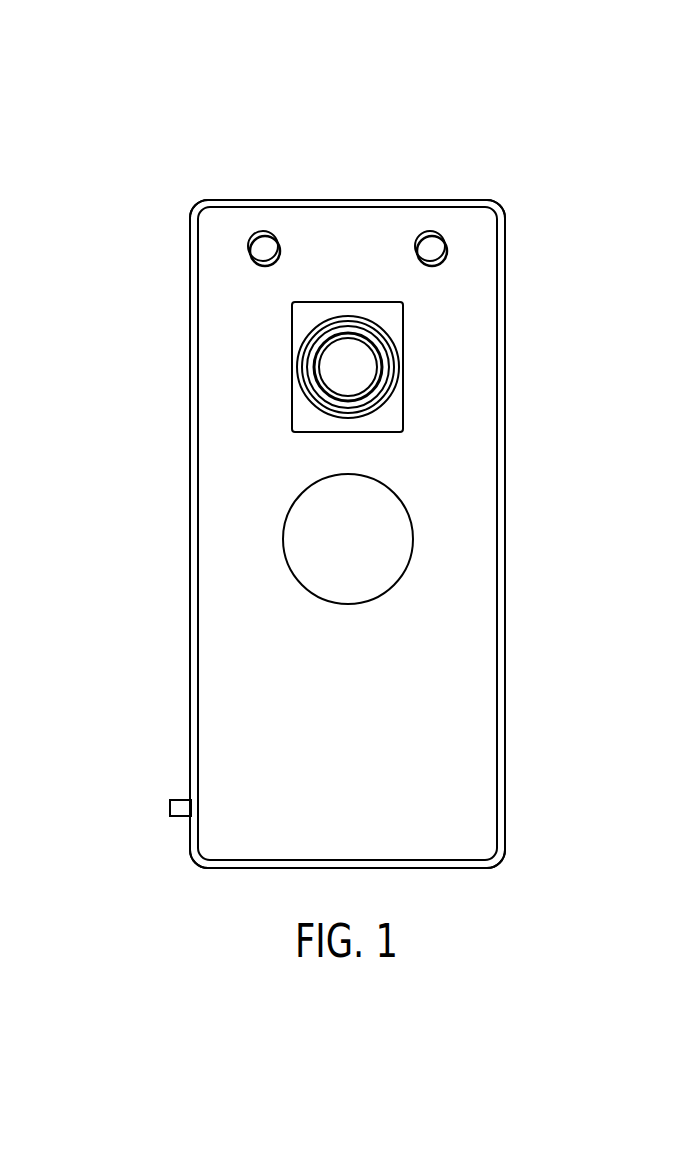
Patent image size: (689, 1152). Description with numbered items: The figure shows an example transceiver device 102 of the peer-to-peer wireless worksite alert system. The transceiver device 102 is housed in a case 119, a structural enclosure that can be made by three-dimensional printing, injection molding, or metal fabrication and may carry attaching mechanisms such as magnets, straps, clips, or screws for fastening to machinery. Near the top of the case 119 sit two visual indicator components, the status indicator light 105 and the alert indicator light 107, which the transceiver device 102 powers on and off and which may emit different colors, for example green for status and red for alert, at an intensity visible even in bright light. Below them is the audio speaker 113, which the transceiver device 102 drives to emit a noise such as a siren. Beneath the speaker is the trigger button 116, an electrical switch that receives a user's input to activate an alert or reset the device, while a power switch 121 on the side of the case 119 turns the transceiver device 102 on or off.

The transceiver device 102 is at (108, 84).
The status indicator light 105 is at (232, 218).
The alert indicator light 107 is at (455, 218).
The audio speaker 113 is at (264, 378).
The trigger button 116 is at (437, 549).
The case 119 is at (487, 808).
The power switch 121 is at (147, 810).